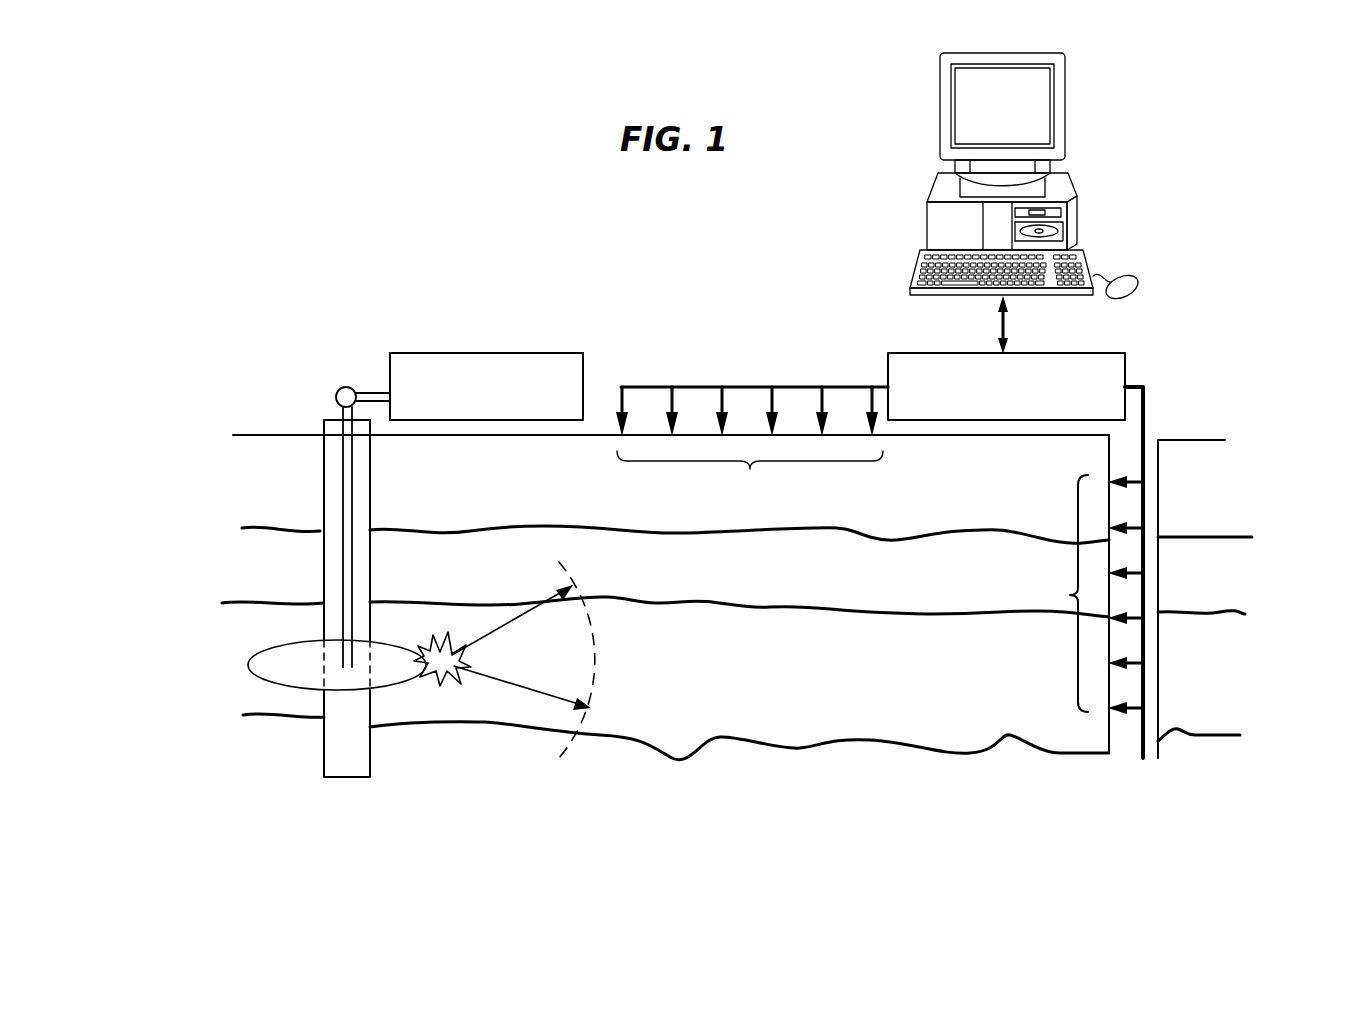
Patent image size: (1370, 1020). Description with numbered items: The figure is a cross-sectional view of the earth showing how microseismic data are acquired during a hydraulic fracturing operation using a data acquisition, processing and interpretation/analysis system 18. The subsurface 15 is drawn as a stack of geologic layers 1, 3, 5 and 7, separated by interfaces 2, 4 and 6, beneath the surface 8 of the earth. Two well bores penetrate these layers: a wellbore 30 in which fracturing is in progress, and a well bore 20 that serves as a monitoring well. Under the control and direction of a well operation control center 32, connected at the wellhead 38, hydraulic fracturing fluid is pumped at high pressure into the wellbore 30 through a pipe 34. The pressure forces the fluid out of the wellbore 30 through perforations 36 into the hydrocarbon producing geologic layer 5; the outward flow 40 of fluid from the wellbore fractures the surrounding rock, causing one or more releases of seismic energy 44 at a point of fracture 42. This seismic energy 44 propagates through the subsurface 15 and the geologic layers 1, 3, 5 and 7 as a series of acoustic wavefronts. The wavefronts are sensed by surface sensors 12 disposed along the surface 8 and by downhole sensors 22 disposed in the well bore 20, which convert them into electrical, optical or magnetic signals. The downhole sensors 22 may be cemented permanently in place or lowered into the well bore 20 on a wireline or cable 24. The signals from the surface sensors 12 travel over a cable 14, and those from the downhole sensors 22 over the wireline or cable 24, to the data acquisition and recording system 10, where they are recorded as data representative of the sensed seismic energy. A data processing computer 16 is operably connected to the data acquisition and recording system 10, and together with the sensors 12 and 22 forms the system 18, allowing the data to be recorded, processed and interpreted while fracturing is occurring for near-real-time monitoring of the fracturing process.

The geologic layer 1 is at (845, 510).
The interface 2 is at (957, 540).
The geologic layer 3 is at (845, 584).
The interface 4 is at (957, 617).
The hydrocarbon producing geologic layer 5 is at (845, 689).
The interface 6 is at (957, 755).
The geologic layer 7 is at (845, 819).
The surface 8 is at (231, 433).
The data acquisition and recording system 10 is at (1125, 363).
The surface sensors 12 is at (749, 443).
The cable 14 is at (752, 386).
The subsurface 15 is at (1258, 500).
The data processing computer 16 is at (1077, 185).
The data acquisition, processing and interpretation/analysis system 18 is at (1230, 177).
The well bore 20 is at (1150, 567).
The downhole sensors 22 is at (1094, 594).
The wireline or cable 24 is at (1143, 414).
The wellbore 30 is at (335, 480).
The well operation control center 32 is at (469, 353).
The pipe 34 is at (353, 484).
The perforations 36 is at (322, 657).
The wellhead 38 is at (324, 425).
The outward flow of fracturing fluid 40 is at (250, 672).
The point of fracture 42 is at (441, 682).
The seismic energy 44 is at (599, 660).